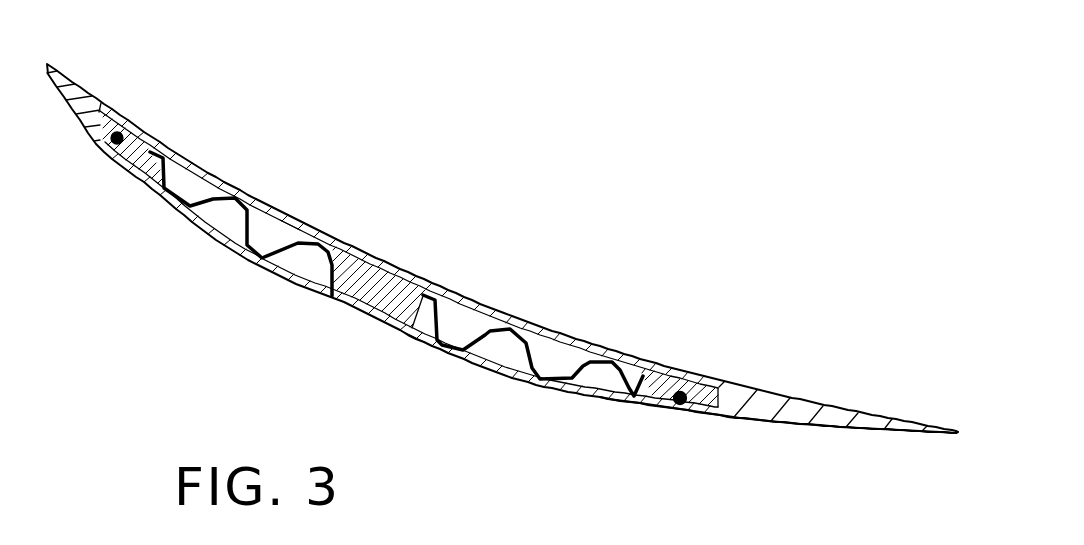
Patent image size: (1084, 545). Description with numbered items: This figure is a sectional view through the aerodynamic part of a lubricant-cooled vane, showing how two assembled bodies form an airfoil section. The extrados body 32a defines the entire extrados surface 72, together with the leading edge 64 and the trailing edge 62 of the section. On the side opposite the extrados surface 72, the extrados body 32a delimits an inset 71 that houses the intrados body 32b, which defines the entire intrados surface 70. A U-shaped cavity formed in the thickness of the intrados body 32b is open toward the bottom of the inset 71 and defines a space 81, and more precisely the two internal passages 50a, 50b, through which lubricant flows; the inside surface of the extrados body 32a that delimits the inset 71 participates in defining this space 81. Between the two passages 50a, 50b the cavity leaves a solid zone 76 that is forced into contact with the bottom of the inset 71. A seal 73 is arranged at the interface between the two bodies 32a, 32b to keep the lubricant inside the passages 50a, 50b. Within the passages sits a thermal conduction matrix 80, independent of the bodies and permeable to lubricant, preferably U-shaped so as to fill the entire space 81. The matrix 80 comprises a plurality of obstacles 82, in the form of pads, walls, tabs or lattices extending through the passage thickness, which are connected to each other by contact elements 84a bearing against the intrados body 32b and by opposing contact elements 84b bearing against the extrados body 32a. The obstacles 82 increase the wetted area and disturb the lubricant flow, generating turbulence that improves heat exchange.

The extrados body 32a is at (738, 426).
The intrados body 32b is at (689, 375).
The internal passage 50a is at (608, 390).
The internal passage 50b is at (345, 260).
The trailing edge 62 is at (900, 428).
The leading edge 64 is at (55, 70).
The intrados surface 70 is at (290, 218).
The inset 71 is at (210, 226).
The extrados surface 72 is at (412, 344).
The seal 73 is at (680, 403).
The solid zone 76 is at (380, 278).
The thermal conduction matrix 80 is at (537, 345).
The space 81 is at (308, 272).
The obstacles 82 is at (202, 203).
The contact elements 84a is at (214, 201).
The opposing contact elements 84b is at (157, 194).